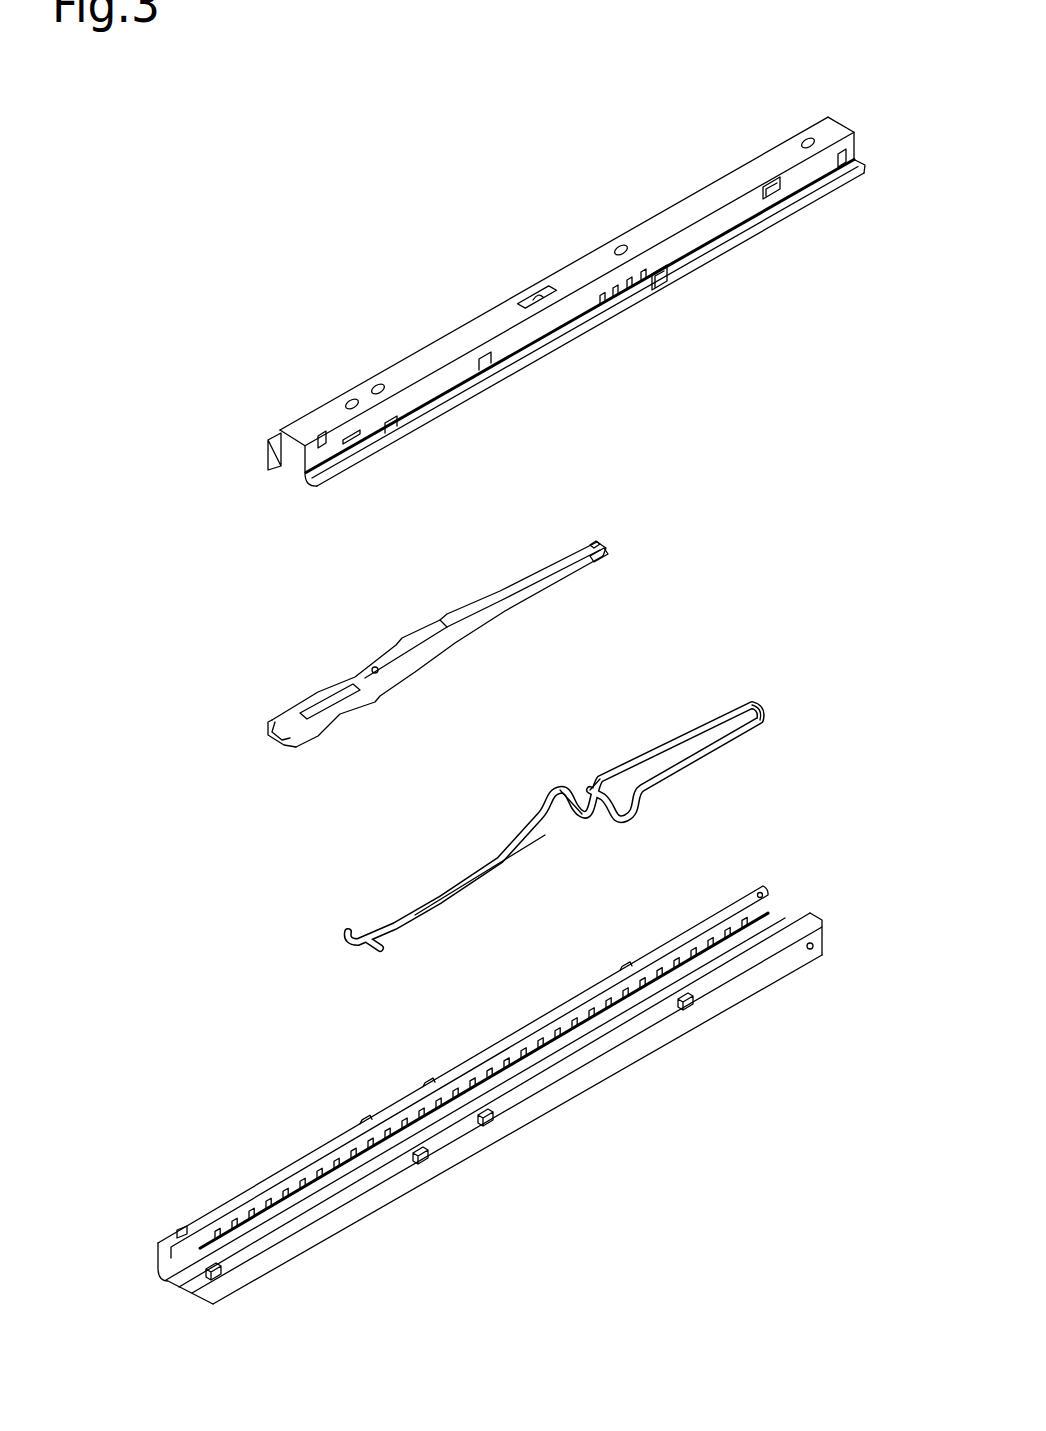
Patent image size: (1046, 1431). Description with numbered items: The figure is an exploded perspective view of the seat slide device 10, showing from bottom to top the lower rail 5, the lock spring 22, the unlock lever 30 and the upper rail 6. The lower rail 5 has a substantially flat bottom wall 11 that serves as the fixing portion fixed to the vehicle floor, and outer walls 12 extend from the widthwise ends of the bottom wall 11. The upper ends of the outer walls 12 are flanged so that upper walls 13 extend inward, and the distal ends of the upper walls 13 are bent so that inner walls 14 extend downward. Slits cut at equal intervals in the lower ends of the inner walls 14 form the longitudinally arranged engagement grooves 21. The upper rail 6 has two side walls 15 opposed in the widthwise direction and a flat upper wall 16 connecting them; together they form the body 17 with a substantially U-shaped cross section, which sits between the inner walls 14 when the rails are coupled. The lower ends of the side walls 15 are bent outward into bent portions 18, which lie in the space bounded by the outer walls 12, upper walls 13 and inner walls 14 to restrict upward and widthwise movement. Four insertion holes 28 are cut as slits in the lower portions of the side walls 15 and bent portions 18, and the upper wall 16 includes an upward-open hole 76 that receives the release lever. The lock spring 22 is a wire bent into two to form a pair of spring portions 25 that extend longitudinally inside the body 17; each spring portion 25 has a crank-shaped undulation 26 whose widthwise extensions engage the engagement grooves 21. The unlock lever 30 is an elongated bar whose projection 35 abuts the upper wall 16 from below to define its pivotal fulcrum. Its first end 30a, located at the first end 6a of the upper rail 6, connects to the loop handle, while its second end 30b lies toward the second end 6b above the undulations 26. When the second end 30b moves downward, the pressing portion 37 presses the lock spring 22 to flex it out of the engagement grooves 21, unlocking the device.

The slide rail device 10 is at (160, 140).
The upper rail 6 is at (530, 205).
The first end of the upper rail 6a is at (300, 428).
The second end of the upper rail 6b is at (838, 124).
The upper wall 16 is at (485, 326).
The body 17 is at (735, 172).
The side walls 15 is at (802, 177).
The bent portions 18 is at (750, 222).
The hole 76 is at (542, 290).
The insertion holes 28 is at (644, 291).
The unlock lever 30 is at (300, 635).
The projection 35 is at (392, 598).
The first end of the unlock lever 30a is at (270, 720).
The second end of the unlock lever 30b is at (600, 545).
The pressing portion 37 is at (585, 545).
The lock spring 22 is at (515, 750).
The undulations 26 is at (595, 775).
The spring portions 25 is at (700, 727).
The lower rail 5 is at (340, 1078).
The upper walls 13 is at (788, 930).
The inner walls 14 is at (640, 985).
The outer walls 12 is at (460, 1150).
The bottom wall 11 is at (190, 1292).
The engagement grooves 21 is at (580, 1020).